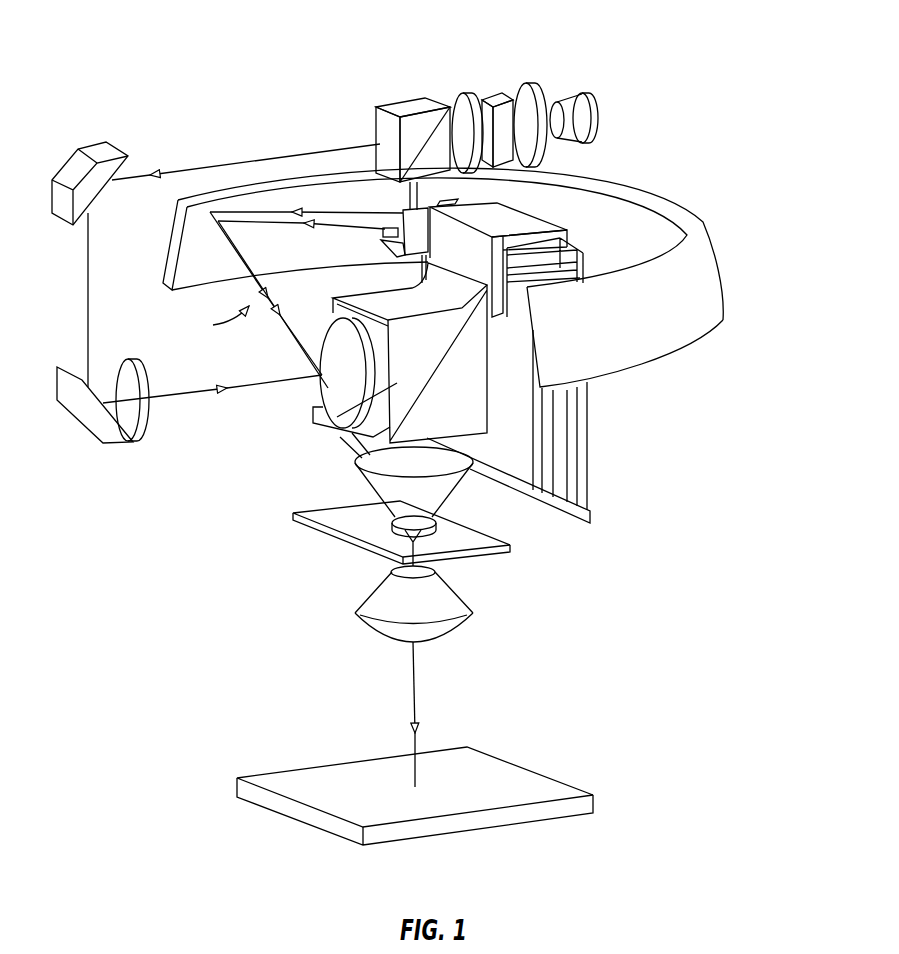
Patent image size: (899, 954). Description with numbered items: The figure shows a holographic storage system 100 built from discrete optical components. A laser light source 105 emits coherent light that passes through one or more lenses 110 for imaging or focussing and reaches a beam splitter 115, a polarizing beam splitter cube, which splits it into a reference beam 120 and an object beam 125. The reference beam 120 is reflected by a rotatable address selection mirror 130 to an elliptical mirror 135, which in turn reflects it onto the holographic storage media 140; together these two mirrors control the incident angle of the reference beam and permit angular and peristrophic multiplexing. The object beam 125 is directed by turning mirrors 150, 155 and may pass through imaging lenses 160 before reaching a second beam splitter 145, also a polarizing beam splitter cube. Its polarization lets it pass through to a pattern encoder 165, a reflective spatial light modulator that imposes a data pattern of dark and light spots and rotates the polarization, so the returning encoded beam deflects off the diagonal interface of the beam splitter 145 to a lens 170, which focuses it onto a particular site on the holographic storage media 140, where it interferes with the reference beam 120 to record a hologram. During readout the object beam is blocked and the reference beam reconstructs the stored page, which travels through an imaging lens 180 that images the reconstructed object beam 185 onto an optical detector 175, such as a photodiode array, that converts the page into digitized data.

The holographic storage system 100 is at (103, 47).
The laser light source 105 is at (600, 80).
The lenses 110 is at (503, 80).
The beam splitter 115 is at (403, 95).
The reference beam 120 is at (407, 192).
The object beam 125 is at (193, 147).
The rotatable address selection mirror 130 is at (463, 195).
The elliptical mirror 135 is at (735, 282).
The holographic storage media 140 is at (520, 554).
The beam splitter 145 is at (474, 408).
The turning mirror 150 is at (58, 150).
The turning mirror 155 is at (78, 436).
The imaging lenses 160 is at (166, 424).
The pattern encoder 165 is at (600, 457).
The lens 170 is at (464, 494).
The optical detector 175 is at (601, 800).
The imaging lens 180 is at (477, 597).
The reconstructed object beam 185 is at (418, 697).